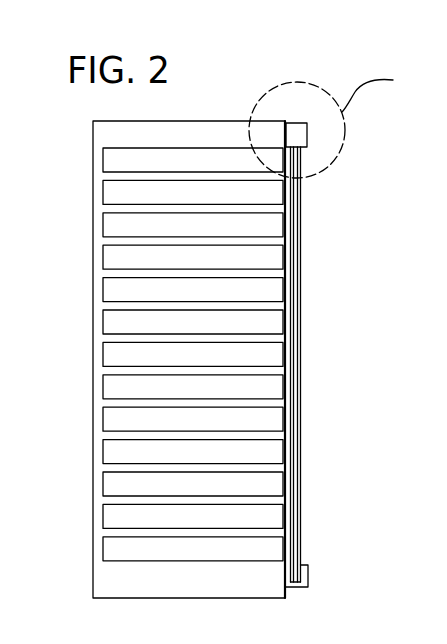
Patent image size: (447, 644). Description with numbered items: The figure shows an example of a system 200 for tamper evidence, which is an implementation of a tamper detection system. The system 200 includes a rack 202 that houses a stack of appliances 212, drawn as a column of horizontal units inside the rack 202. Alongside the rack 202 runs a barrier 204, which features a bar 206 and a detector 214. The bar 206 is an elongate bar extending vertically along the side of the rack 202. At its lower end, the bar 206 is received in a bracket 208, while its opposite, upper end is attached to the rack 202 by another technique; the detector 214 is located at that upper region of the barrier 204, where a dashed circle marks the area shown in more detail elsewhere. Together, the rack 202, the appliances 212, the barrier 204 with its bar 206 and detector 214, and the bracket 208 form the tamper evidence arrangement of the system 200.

The system 200 is at (223, 73).
The rack 202 is at (93, 226).
The barrier 204 is at (298, 324).
The bar 206 is at (298, 256).
The bracket 208 is at (308, 578).
The appliances 212 is at (103, 355).
The detector 214 is at (302, 122).